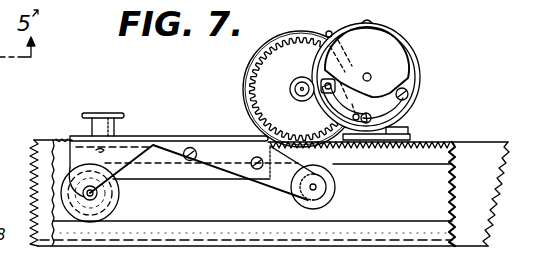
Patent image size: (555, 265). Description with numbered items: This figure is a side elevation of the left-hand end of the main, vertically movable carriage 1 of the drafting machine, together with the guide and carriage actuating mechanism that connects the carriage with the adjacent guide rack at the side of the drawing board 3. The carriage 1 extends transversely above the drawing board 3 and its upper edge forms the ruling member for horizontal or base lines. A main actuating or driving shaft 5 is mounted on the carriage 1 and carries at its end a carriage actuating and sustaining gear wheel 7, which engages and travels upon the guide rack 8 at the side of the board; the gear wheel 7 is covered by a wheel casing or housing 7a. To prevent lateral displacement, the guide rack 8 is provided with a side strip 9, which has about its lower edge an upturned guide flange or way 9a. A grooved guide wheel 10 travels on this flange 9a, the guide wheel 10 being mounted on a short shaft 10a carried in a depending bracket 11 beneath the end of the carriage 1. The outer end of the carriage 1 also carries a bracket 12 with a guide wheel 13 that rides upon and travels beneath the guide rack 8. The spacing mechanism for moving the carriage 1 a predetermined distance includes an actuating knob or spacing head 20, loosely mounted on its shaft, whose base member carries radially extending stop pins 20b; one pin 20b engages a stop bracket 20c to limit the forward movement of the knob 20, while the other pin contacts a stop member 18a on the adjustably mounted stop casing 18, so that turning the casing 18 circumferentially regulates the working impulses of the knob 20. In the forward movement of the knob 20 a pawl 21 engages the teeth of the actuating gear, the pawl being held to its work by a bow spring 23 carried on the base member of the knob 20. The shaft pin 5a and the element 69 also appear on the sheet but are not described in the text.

The vertically movable carriage 1 is at (190, 135).
The drawing board 3 is at (481, 154).
The main actuating or driving shaft 5 is at (291, 88).
The shaft pin 5a is at (303, 82).
The carriage actuating and sustaining gear wheel 7 is at (268, 62).
The wheel casing or housing 7a is at (299, 31).
The guide rack 8 is at (433, 157).
The side strip 9 is at (442, 190).
The upturned guide flange or way 9a is at (403, 233).
The grooved guide wheel 10 is at (115, 203).
The short shaft 10a is at (84, 192).
The depending bracket 11 is at (74, 177).
The bracket 12 is at (280, 182).
The guide wheel 13 is at (334, 187).
The stop casing 18 is at (414, 68).
The stop member 18a is at (370, 24).
The actuating knob or spacing head 20 is at (388, 62).
The radially extending stop pin 20b is at (329, 31).
The stop bracket 20c is at (405, 130).
The pawl 21 is at (331, 108).
The bow spring 23 is at (412, 108).
The lever 69 is at (8, 75).